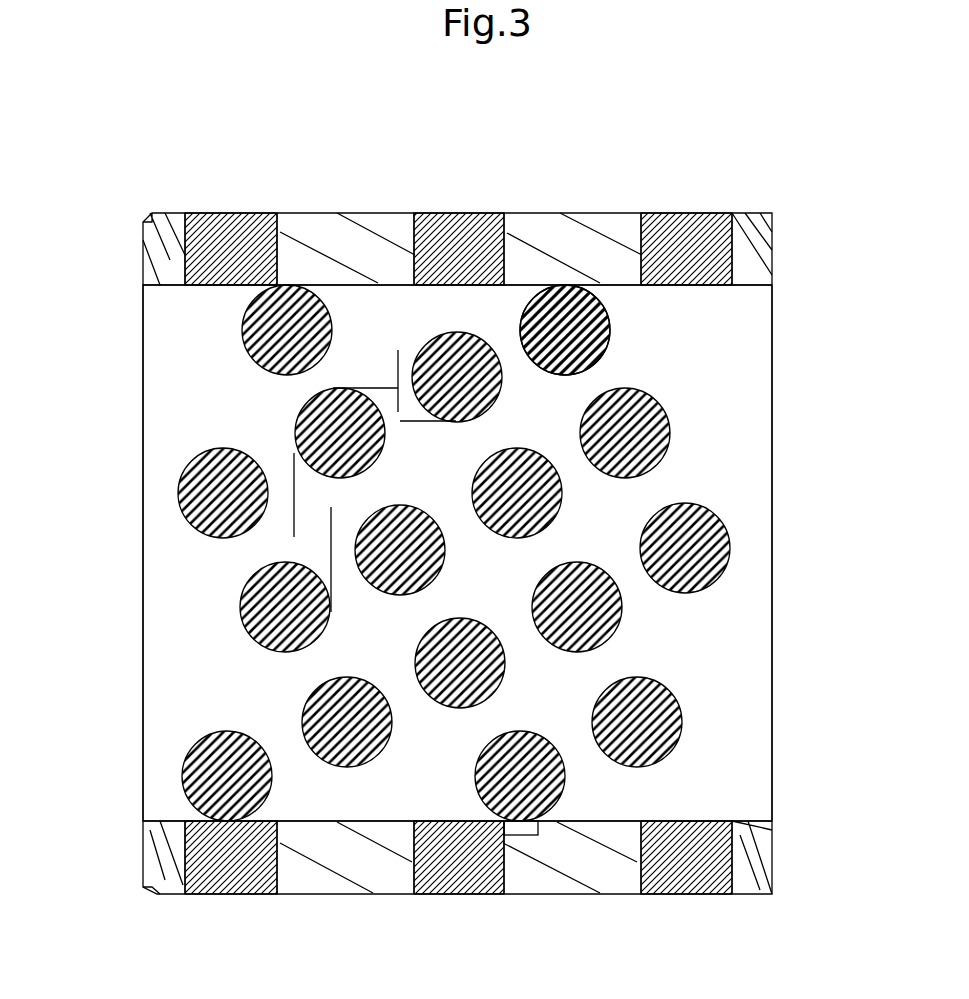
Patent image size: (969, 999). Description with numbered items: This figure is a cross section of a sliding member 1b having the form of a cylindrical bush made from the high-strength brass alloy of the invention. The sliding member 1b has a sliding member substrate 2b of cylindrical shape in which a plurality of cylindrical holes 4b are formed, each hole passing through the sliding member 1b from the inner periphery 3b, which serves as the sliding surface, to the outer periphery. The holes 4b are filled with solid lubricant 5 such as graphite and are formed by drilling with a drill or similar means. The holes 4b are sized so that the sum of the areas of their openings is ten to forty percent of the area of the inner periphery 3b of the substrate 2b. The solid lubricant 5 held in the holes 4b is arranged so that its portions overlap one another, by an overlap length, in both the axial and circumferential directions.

The sliding member 1b is at (463, 545).
The sliding member substrate 2b is at (572, 858).
The inner periphery 3b is at (745, 643).
The cylindrical holes 4b is at (513, 308).
The solid lubricant 5 is at (686, 250).